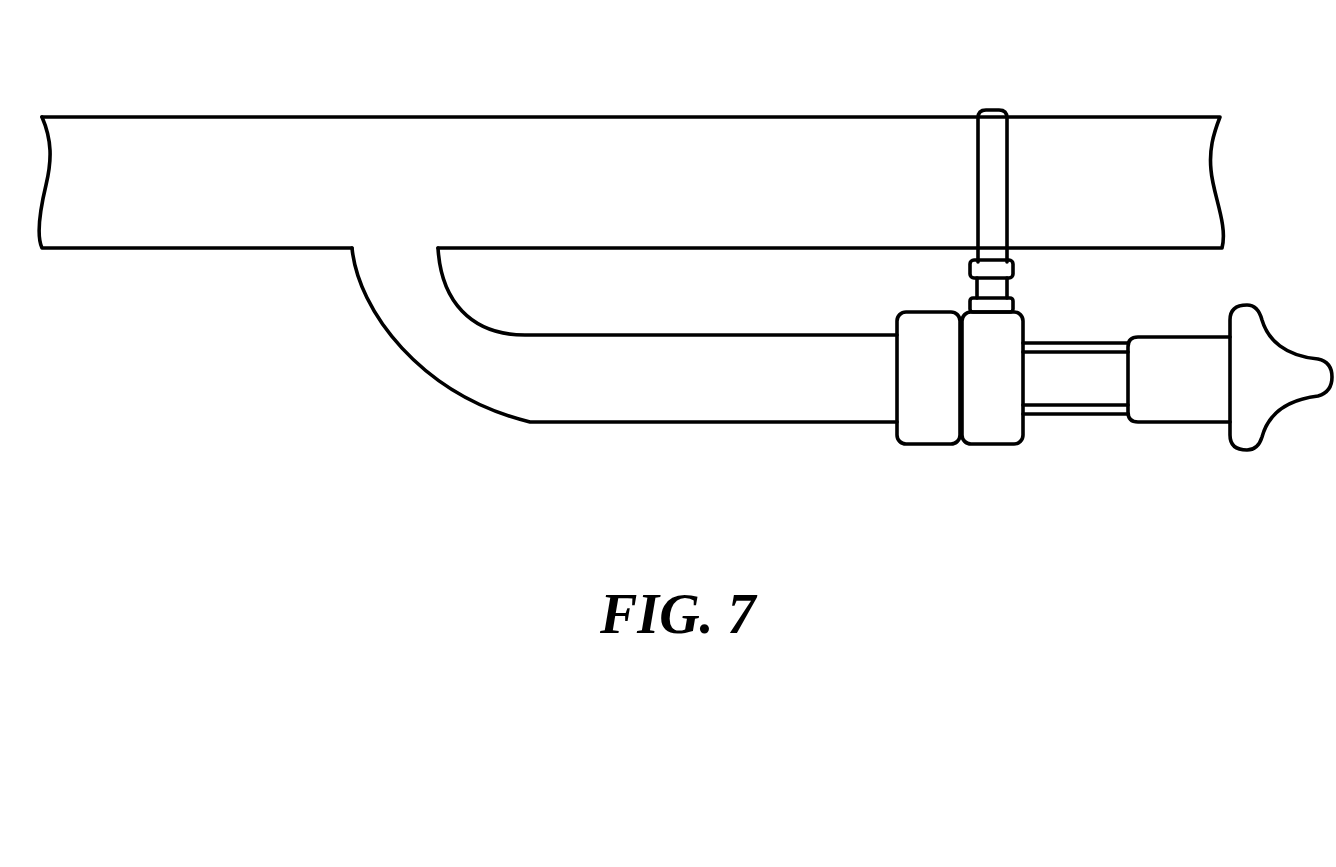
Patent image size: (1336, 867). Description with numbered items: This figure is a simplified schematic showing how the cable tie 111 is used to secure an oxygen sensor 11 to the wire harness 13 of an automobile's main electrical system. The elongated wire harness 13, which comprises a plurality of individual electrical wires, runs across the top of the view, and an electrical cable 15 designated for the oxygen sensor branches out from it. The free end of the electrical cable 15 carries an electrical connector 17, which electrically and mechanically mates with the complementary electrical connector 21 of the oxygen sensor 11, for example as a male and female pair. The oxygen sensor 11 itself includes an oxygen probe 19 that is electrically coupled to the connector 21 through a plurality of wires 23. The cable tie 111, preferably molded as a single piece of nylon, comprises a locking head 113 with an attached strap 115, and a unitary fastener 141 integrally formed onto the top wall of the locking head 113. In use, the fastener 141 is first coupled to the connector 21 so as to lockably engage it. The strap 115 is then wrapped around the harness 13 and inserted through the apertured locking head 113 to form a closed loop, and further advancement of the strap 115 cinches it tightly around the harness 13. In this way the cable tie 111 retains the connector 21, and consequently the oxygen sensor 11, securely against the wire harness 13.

The oxygen sensor 11 is at (1167, 452).
The wire harness 13 is at (745, 133).
The electrical cable 15 is at (424, 368).
The electrical connector 17 is at (936, 433).
The oxygen probe 19 is at (1260, 438).
The electrical connector 21 is at (987, 433).
The wires 23 is at (1071, 347).
The cable tie 111 is at (988, 110).
The locking head 113 is at (1003, 268).
The strap 115 is at (993, 157).
The fastener 141 is at (988, 287).